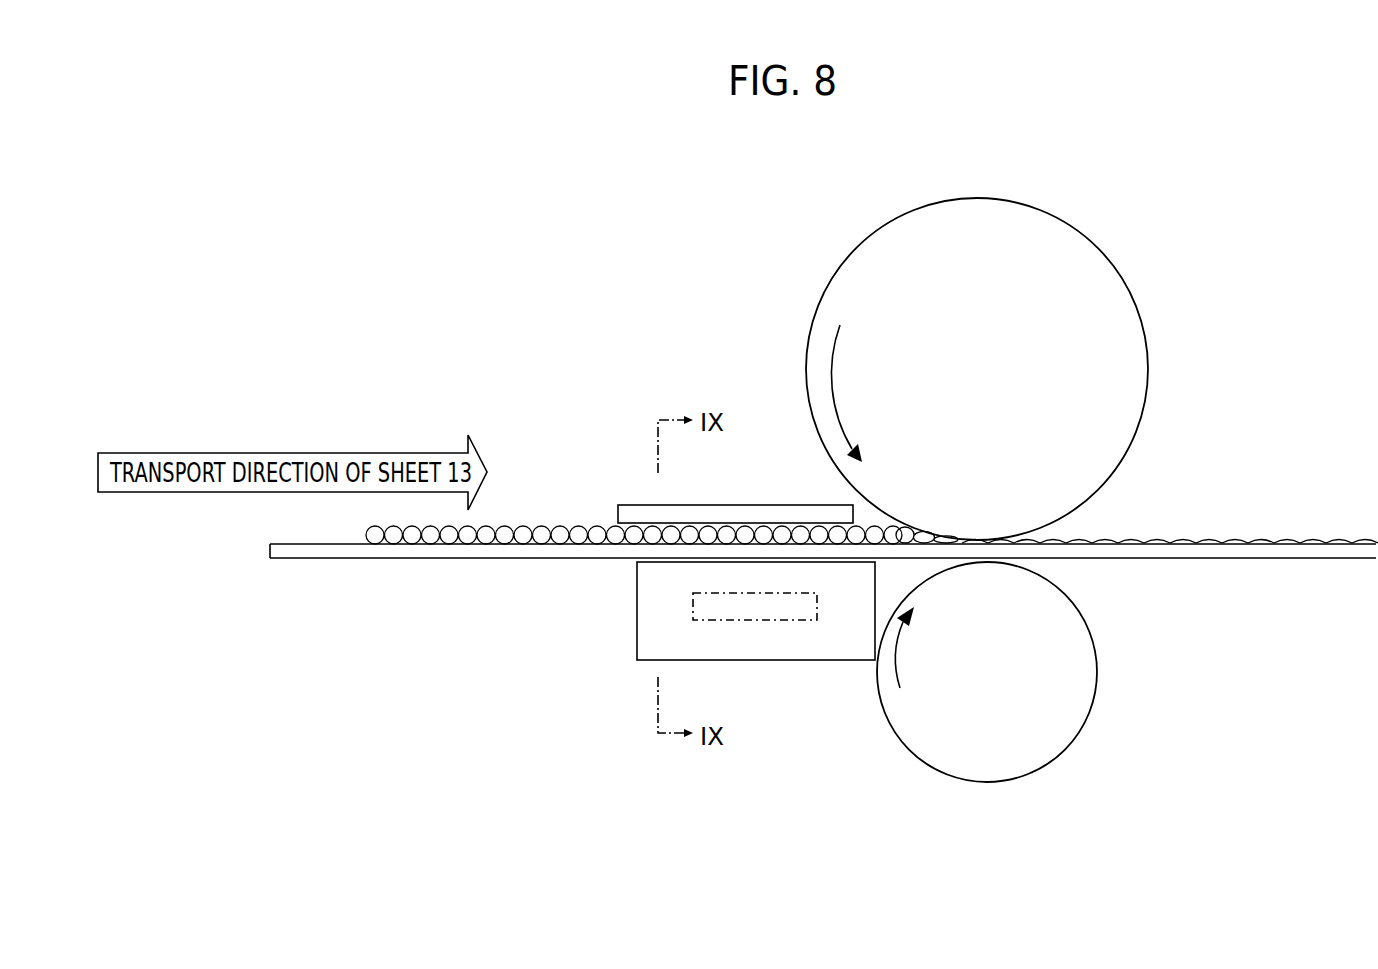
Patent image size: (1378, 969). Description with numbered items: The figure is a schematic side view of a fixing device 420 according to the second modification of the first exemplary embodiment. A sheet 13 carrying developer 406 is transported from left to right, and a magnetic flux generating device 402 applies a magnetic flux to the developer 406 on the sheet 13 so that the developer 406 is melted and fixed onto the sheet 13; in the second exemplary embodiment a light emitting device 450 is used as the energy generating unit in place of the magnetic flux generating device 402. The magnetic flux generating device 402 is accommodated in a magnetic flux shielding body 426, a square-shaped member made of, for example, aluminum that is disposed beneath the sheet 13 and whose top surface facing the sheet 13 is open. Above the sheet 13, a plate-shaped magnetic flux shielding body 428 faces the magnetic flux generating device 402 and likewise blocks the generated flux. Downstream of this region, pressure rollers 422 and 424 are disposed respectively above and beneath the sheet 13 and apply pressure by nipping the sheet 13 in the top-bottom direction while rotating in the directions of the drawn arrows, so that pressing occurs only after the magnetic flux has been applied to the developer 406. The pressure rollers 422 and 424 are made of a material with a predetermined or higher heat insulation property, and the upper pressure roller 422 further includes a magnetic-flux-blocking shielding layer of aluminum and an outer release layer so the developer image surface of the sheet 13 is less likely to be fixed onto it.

The sheet 13 is at (325, 565).
The developer 406 is at (532, 507).
The fixing device 420 is at (1225, 205).
The pressure roller 422 is at (1122, 278).
The pressure roller 424 is at (1092, 640).
The magnetic flux shielding body 426 is at (800, 660).
The magnetic flux shielding body 428 is at (765, 505).
The magnetic flux generating device 402 is at (697, 621).
The light emitting device 450 is at (663, 639).